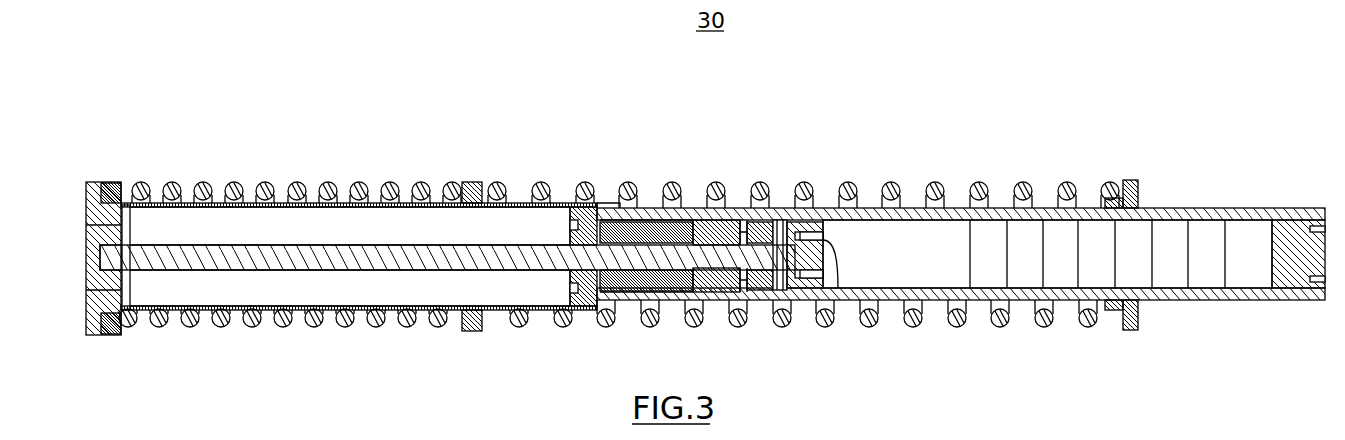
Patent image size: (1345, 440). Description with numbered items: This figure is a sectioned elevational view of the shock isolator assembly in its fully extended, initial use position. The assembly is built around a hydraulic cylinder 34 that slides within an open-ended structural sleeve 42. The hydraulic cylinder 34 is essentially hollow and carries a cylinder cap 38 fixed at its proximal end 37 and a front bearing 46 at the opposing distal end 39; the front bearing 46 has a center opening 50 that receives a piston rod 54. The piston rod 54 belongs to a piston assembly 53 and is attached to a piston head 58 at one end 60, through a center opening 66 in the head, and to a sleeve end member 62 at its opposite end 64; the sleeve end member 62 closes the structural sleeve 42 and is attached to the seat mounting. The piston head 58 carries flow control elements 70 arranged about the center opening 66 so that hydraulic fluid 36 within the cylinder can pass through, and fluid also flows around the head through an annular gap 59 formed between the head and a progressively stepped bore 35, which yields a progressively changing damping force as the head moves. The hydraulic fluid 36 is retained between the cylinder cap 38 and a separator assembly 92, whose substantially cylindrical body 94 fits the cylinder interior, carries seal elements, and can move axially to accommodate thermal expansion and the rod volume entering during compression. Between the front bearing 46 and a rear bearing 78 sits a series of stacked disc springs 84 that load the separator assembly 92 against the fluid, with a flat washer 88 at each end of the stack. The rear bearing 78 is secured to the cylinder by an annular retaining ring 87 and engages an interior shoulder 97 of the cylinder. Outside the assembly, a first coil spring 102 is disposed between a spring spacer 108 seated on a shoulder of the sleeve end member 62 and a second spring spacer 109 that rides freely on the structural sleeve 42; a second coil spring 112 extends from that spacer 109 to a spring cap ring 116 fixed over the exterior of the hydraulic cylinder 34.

The hydraulic cylinder 34 is at (1212, 208).
The progressively stepped bore 35 is at (1107, 235).
The hydraulic fluid 36 is at (945, 238).
The proximal end 37 is at (1325, 208).
The cylinder cap 38 is at (1268, 260).
The distal end 39 is at (606, 205).
The structural sleeve 42 is at (298, 312).
The front bearing 46 is at (578, 207).
The center opening 50 is at (568, 245).
The piston assembly 53 is at (548, 285).
The piston rod 54 is at (345, 250).
The piston head 58 is at (785, 208).
The annular gap 59 is at (817, 208).
The one end 60 is at (823, 240).
The sleeve end member 62 is at (96, 335).
The opposite end 64 is at (130, 240).
The center opening 66 is at (823, 265).
The flow control elements 70 is at (840, 300).
The rear bearing 78 is at (748, 208).
The disc springs 84 is at (652, 208).
The annular retaining ring 87 is at (743, 208).
The flat washer 88 is at (592, 312).
The separator assembly 92 is at (754, 300).
The separator body 94 is at (700, 208).
The interior shoulder 97 is at (768, 300).
The first coil spring 102 is at (205, 183).
The spring spacer 108 is at (110, 183).
The spring spacer 109 is at (471, 182).
The second coil spring 112 is at (887, 183).
The spring cap ring 116 is at (1138, 330).